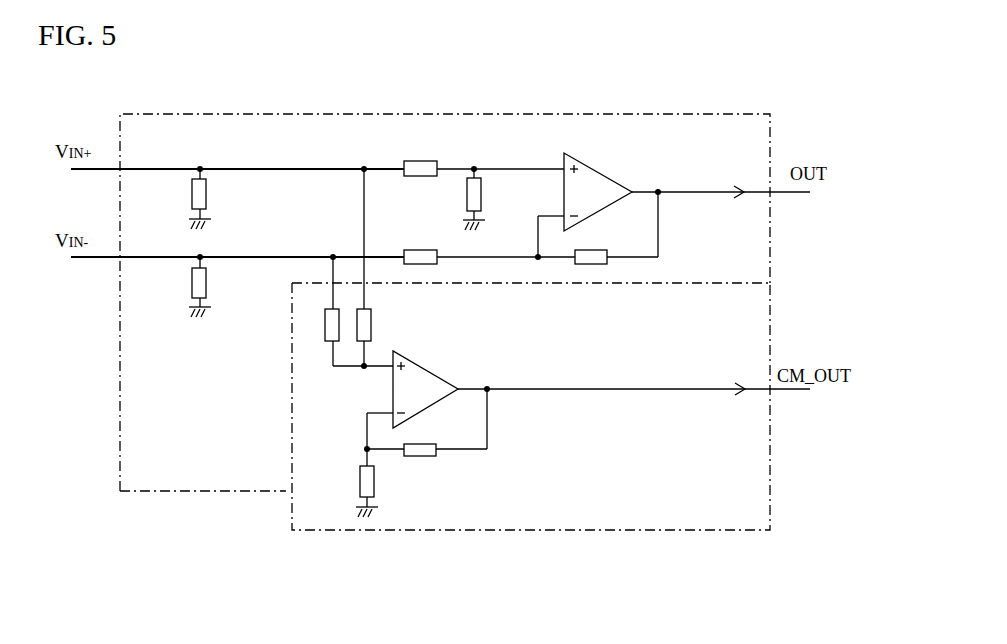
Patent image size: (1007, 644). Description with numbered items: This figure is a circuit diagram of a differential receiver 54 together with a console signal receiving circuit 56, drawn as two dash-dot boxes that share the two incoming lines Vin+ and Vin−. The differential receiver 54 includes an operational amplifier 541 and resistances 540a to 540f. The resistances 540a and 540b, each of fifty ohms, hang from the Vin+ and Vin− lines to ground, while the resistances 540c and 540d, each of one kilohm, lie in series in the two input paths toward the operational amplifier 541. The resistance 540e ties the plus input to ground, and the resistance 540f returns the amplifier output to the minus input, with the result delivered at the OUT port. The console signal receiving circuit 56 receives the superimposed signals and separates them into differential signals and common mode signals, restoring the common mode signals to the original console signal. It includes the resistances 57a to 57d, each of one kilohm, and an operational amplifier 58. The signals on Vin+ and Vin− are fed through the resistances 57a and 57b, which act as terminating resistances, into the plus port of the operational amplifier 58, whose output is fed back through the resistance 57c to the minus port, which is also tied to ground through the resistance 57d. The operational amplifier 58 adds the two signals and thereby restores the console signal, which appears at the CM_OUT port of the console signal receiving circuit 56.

The differential receiver 54 is at (187, 491).
The console signal receiving circuit 56 is at (610, 530).
The resistance 540a is at (207, 194).
The resistance 540b is at (207, 283).
The resistance 540c is at (424, 161).
The resistance 540d is at (424, 250).
The resistance 540e is at (481, 196).
The resistance 540f is at (594, 264).
The operational amplifier 541 is at (604, 173).
The resistance 57a is at (372, 326).
The resistance 57b is at (325, 325).
The resistance 57c is at (424, 456).
The resistance 57d is at (375, 486).
The operational amplifier 58 is at (430, 370).